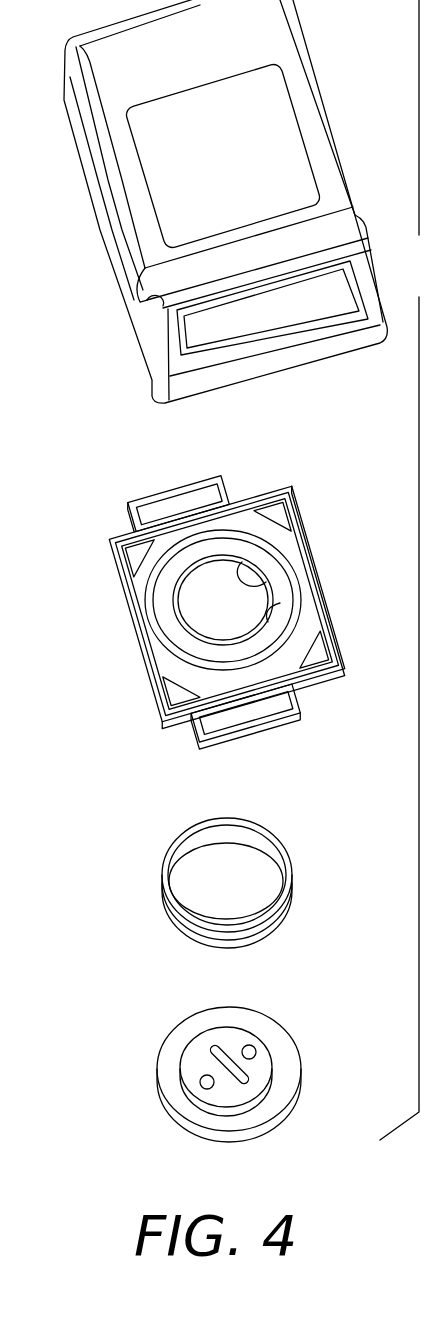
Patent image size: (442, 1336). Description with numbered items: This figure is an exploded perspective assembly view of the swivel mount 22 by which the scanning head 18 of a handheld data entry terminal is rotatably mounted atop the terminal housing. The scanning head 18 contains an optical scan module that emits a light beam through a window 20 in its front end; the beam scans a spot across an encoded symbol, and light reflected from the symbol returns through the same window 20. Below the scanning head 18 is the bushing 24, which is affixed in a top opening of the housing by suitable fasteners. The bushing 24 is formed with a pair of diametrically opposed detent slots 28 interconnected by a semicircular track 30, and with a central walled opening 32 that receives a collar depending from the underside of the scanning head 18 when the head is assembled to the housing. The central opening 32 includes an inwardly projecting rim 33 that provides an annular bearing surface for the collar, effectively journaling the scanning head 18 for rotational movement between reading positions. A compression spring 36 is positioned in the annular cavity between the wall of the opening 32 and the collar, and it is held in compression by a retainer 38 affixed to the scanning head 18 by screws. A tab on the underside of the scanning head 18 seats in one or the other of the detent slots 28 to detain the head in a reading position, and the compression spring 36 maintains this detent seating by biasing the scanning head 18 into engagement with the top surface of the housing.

The scanning head 18 is at (317, 132).
The window 20 is at (330, 288).
The swivel mount 22 is at (157, 796).
The bushing 24 is at (107, 547).
The detent slots 28 is at (188, 532).
The semicircular track 30 is at (155, 632).
The central walled opening 32 is at (273, 580).
The inwardly projecting rim 33 is at (272, 604).
The compression spring 36 is at (263, 832).
The retainer 38 is at (278, 1037).